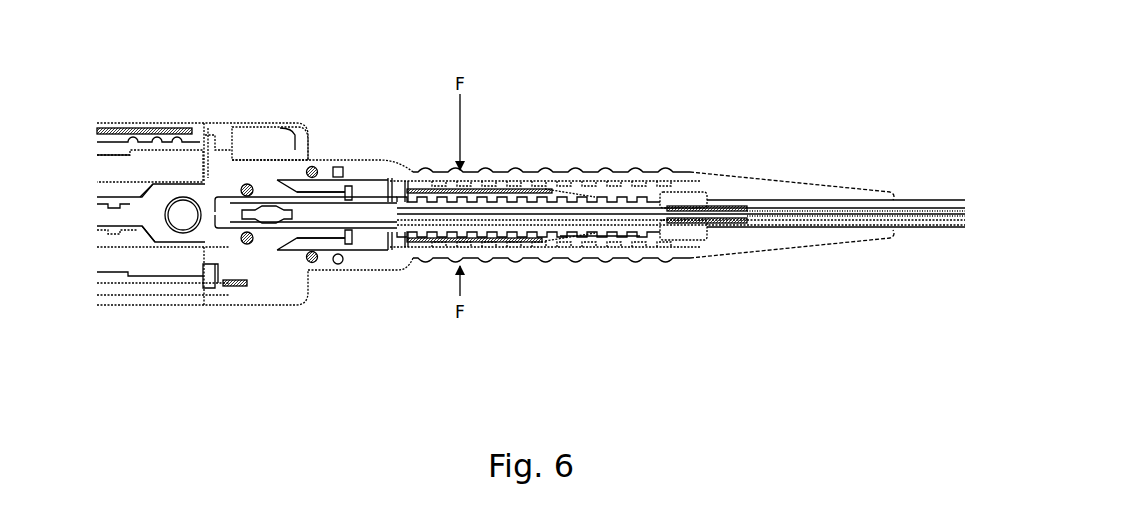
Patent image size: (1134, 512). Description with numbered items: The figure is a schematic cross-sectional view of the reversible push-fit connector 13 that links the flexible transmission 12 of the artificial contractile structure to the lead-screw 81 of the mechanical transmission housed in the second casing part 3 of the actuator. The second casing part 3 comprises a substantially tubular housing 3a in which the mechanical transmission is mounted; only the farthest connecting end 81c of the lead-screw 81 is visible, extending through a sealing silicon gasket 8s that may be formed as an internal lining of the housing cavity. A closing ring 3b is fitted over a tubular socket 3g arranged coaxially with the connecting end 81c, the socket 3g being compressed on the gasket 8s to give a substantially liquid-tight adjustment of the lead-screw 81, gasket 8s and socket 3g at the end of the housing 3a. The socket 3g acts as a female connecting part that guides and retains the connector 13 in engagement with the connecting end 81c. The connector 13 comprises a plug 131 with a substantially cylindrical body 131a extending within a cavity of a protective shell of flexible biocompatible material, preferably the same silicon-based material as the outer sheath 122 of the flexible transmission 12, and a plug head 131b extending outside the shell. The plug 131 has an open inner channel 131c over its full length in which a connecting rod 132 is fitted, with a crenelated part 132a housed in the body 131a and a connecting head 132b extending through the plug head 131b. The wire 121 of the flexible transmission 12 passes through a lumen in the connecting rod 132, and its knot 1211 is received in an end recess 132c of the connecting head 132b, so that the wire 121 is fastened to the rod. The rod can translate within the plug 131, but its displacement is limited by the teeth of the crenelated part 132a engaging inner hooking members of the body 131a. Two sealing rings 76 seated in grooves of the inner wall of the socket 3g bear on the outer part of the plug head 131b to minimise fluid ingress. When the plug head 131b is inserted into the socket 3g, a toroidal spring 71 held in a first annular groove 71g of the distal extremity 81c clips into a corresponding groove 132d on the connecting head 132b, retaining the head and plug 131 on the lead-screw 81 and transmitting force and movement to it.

The second casing part 3 is at (170, 95).
The tubular housing 3a is at (162, 122).
The closing ring 3b is at (295, 147).
The tubular socket 3g is at (348, 160).
The flexible transmission 12 is at (927, 199).
The push-fit connector 13 is at (671, 106).
The toroidal spring 71 is at (243, 188).
The first annular groove 71g is at (243, 240).
The sealing rings 76 is at (341, 256).
The lead-screw 81 is at (102, 216).
The connecting end of the lead-screw 81c is at (160, 233).
The sealing silicon gasket 8s is at (212, 273).
The wire 121 is at (820, 212).
The outer sheath 122 is at (935, 223).
The knot 1211 is at (264, 214).
The plug 131 is at (434, 188).
The plug body 131a is at (627, 192).
The plug head 131b is at (364, 183).
The inner channel 131c is at (644, 196).
The connecting rod 132 is at (490, 203).
The crenelated part 132a is at (612, 230).
The connecting head 132b is at (300, 224).
The end recess 132c is at (217, 203).
The annular groove 132d is at (230, 229).